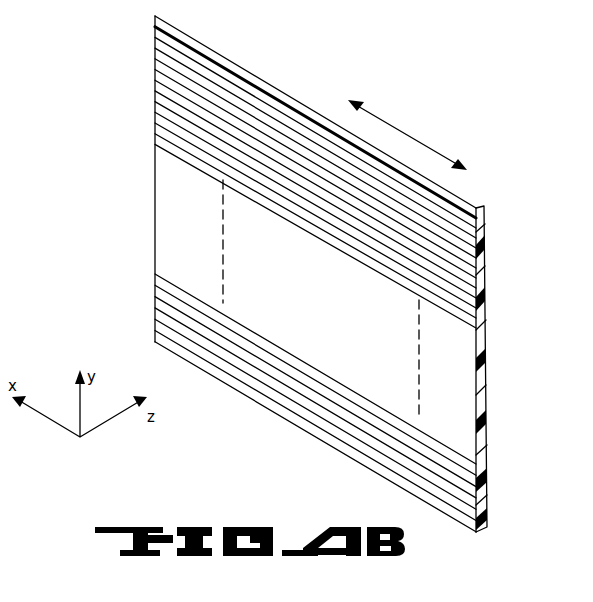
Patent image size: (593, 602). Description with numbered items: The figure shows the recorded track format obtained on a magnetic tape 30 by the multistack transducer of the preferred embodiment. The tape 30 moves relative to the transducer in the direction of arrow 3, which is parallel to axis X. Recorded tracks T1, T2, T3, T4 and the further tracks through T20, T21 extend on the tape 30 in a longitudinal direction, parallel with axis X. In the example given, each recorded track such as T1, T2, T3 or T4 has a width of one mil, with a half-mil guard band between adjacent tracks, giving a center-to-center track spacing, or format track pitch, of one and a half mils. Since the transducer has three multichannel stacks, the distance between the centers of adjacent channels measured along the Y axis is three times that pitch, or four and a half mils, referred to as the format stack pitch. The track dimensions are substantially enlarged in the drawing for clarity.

The recorded track T1 is at (160, 40).
The recorded track T2 is at (160, 65).
The recorded track T3 is at (160, 87).
The recorded track T4 is at (160, 107).
The recorded track T20 is at (160, 300).
The recorded track T21 is at (160, 324).
The arrow 3 is at (427, 145).
The magnetic tape 30 is at (457, 352).